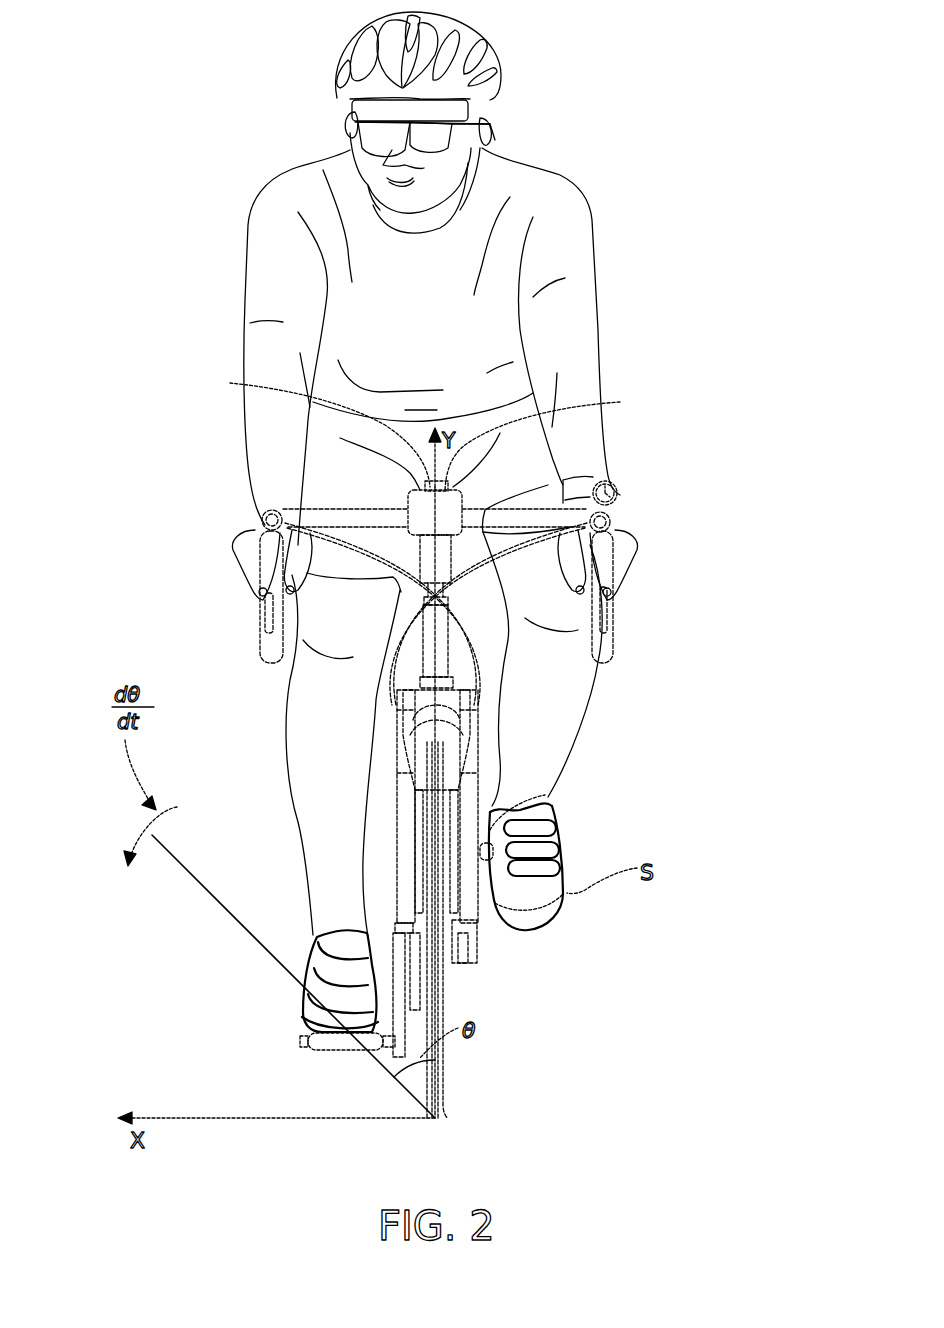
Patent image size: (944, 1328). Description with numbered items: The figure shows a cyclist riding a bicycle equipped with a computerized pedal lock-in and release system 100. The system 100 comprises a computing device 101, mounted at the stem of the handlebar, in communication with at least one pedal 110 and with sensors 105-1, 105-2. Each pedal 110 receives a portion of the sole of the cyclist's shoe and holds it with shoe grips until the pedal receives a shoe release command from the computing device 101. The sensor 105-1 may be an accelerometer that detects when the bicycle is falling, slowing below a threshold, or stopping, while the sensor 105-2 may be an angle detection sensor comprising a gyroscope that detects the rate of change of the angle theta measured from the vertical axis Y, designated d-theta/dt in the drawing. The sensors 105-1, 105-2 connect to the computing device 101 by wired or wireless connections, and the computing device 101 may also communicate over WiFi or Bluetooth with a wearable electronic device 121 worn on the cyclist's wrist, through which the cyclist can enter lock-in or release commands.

The system 100 is at (146, 422).
The computing device 101 is at (463, 497).
The sensor 105-1 is at (295, 430).
The sensor 105-2 is at (566, 438).
The pedal 110 is at (545, 798).
The wearable electronic device 121 is at (627, 492).